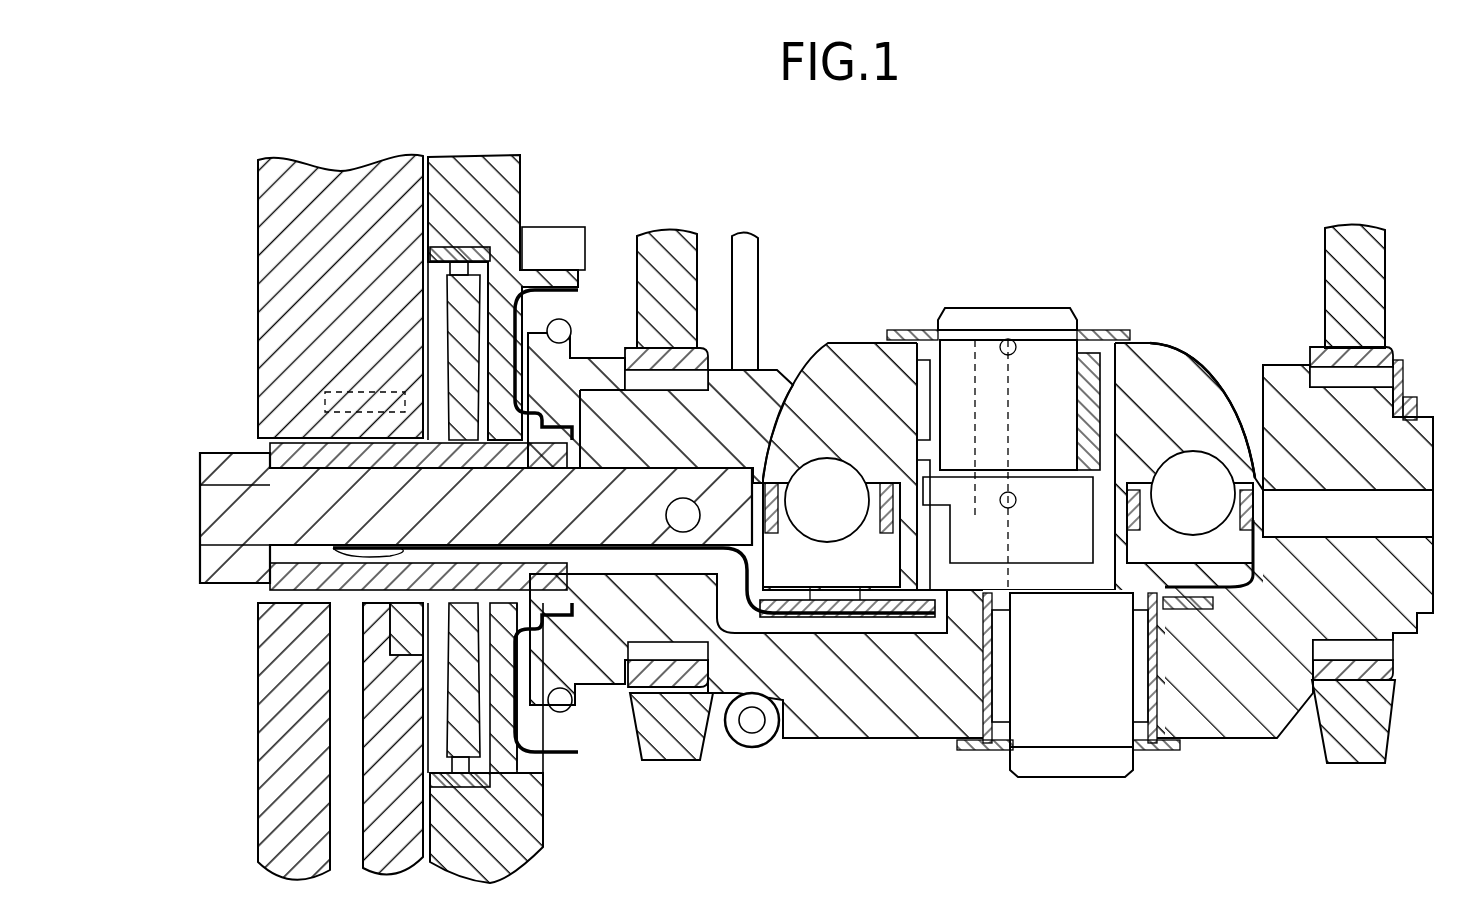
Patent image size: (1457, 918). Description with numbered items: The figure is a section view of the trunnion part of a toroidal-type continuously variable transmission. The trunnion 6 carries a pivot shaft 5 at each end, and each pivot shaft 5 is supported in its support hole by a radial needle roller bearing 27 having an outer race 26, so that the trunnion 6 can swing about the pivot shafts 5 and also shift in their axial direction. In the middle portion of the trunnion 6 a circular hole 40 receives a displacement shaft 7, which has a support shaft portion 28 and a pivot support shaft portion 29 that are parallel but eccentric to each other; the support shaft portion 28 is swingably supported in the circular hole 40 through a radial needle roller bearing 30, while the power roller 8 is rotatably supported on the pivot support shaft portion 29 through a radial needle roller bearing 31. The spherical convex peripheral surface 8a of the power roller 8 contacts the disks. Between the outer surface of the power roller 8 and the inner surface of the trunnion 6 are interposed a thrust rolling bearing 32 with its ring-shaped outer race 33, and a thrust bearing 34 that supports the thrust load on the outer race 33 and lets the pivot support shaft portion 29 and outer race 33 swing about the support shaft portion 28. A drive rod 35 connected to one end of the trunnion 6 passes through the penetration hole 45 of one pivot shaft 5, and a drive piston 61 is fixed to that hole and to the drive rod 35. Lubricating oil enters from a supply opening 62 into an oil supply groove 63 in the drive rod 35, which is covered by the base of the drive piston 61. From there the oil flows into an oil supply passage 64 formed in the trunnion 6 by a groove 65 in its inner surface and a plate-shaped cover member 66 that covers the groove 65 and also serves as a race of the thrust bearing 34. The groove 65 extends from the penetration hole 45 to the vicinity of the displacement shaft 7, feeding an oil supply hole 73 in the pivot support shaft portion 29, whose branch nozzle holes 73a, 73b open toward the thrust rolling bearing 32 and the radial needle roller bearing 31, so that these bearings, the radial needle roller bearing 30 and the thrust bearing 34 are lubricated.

The pivot shaft 5 is at (632, 410).
The trunnion 6 is at (932, 712).
The displacement shaft 7 is at (915, 575).
The power roller 8 is at (1150, 362).
The peripheral surface of power roller 8a is at (1188, 355).
The outer race 26 is at (685, 380).
The radial needle roller bearing 27 is at (660, 380).
The support shaft portion 28 is at (1035, 730).
The pivot support shaft portion 29 is at (1048, 365).
The radial needle roller bearing 30 is at (1140, 660).
The radial needle roller bearing 31 is at (1098, 375).
The thrust rolling bearing 32 is at (1198, 478).
The outer race 33 is at (1232, 570).
The thrust bearing 34 is at (1190, 612).
The drive rod 35 is at (238, 492).
The circular hole 40 is at (1135, 710).
The penetration hole 45 is at (566, 372).
The drive piston 61 is at (480, 690).
The supply opening 62 is at (305, 590).
The oil supply groove 63 is at (350, 553).
The oil supply passage 64 is at (634, 696).
The groove 65 is at (808, 620).
The cover member 66 is at (866, 622).
The oil supply hole 73 is at (1000, 372).
The branch nozzle hole 73a is at (1012, 345).
The branch nozzle hole 73b is at (1003, 495).